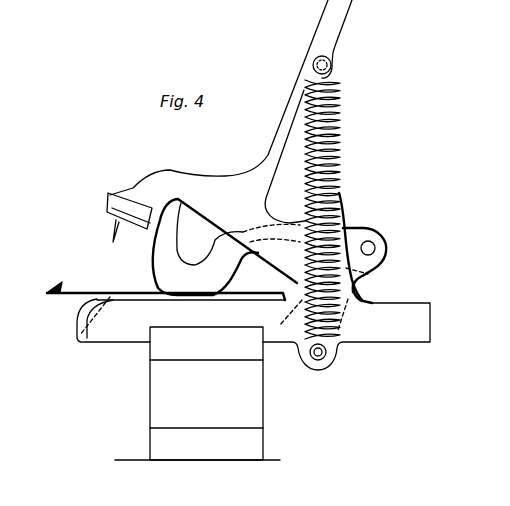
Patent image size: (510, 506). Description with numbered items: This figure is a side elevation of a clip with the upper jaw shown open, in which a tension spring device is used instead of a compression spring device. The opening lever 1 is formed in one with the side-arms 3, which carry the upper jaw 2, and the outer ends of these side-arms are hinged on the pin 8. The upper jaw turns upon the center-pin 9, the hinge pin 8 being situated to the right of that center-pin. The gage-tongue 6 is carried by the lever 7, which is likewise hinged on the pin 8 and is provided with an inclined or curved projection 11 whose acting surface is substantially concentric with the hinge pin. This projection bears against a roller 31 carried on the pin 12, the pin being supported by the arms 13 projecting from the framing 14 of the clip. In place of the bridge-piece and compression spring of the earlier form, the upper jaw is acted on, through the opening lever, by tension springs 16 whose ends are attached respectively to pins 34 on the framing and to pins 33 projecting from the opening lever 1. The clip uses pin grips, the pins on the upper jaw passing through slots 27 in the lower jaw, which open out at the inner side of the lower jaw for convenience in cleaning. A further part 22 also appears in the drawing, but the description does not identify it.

The opening lever 1 is at (232, 97).
The upper jaw 2 is at (122, 217).
The side-arms 3 is at (239, 241).
The gage-tongue 6 is at (205, 247).
The lever of the gage-tongue 7 is at (273, 215).
The hinge pin 8 is at (375, 249).
The center-pin 9 is at (311, 320).
The inclined or curved projection 11 is at (346, 227).
The pin 12 is at (349, 204).
The arms 13 is at (372, 232).
The framing 14 is at (272, 381).
The tension springs 16 is at (340, 157).
The hook 22 is at (358, 292).
The slots 27 is at (78, 332).
The roller 31 is at (348, 196).
The pins 33 is at (331, 65).
The pins 34 is at (327, 356).